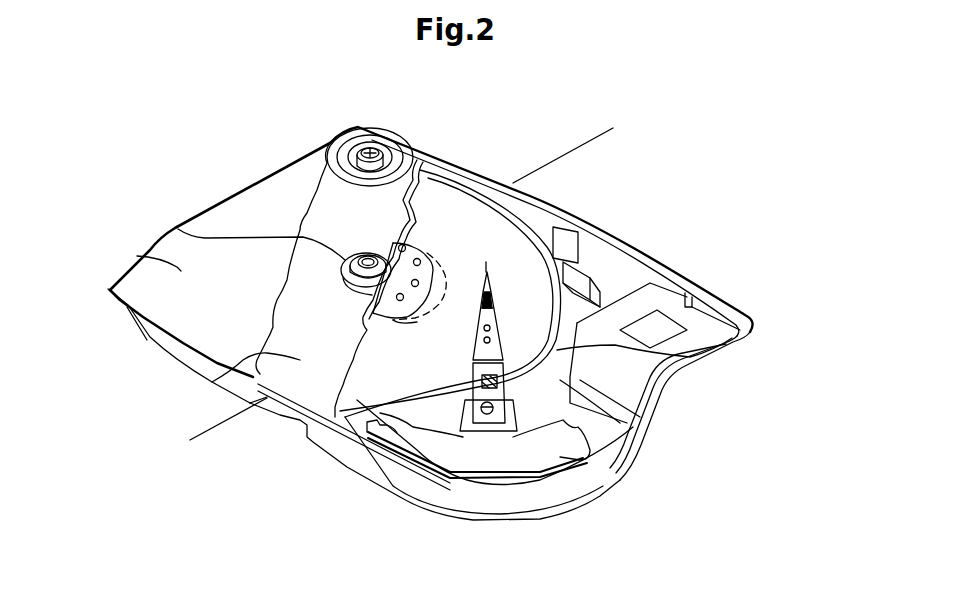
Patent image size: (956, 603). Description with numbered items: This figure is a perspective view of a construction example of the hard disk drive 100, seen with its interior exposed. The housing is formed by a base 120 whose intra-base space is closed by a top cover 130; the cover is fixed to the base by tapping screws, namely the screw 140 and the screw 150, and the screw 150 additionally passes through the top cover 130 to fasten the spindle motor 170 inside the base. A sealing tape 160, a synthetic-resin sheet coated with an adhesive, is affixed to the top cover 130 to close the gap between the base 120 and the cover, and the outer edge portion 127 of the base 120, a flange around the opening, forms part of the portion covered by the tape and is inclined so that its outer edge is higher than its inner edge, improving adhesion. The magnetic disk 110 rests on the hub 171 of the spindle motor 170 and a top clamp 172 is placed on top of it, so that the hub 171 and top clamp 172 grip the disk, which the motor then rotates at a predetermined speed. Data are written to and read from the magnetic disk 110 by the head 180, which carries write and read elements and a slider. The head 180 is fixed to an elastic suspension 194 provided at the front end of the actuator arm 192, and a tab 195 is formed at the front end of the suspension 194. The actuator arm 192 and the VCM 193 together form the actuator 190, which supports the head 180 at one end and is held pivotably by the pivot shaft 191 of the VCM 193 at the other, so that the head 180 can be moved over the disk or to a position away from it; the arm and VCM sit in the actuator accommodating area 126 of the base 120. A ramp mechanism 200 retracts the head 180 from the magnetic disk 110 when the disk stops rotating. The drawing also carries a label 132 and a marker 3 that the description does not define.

The hard disk drive 100 is at (797, 166).
The magnetic disk 110 is at (705, 372).
The base 120 is at (580, 497).
The actuator accommodating area 126 is at (657, 396).
The outer edge portion 127 is at (703, 297).
The top cover 130 is at (212, 382).
The disk 132 is at (413, 143).
The screw 140 is at (343, 135).
The screw 150 is at (210, 240).
The sealing tape 160 is at (137, 256).
The spindle motor 170 is at (440, 237).
The hub 171 is at (423, 320).
The top clamp 172 is at (427, 247).
The head 180 is at (580, 240).
The actuator 190 is at (787, 460).
The pivot shaft 191 is at (487, 414).
The actuator arm 192 is at (590, 432).
The VCM (voice coil motor) 193 is at (583, 450).
The suspension 194 is at (509, 298).
The tab 195 is at (487, 266).
The ramp mechanism 200 is at (597, 290).
The section line 3 is at (612, 130).